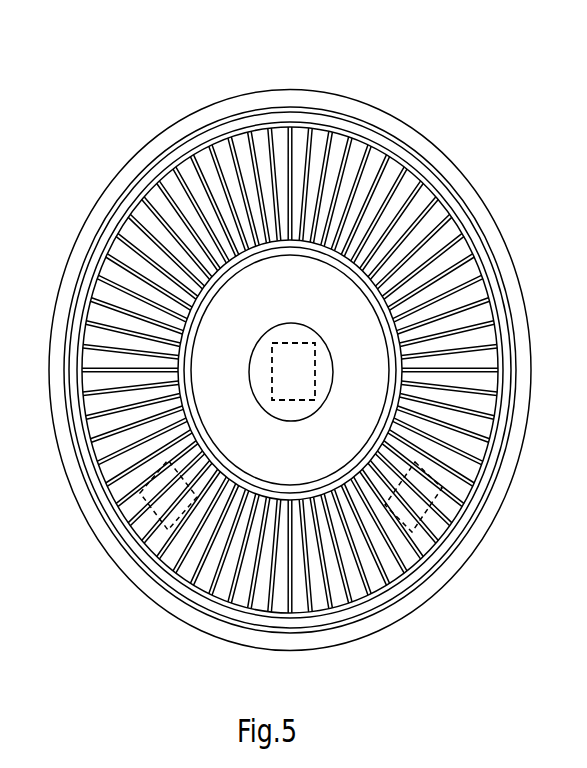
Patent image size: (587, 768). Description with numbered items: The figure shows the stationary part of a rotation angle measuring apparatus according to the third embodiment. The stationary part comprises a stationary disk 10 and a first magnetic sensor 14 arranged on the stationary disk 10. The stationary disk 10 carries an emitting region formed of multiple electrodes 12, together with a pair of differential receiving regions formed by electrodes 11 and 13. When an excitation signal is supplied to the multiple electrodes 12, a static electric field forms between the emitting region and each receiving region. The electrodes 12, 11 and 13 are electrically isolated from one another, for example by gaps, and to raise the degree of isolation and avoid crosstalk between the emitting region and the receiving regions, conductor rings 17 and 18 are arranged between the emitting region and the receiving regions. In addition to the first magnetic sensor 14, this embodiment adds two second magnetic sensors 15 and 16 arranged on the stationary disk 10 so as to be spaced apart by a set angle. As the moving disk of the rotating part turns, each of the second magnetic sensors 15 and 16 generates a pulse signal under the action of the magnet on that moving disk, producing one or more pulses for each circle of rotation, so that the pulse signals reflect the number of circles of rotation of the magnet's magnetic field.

The stationary disk 10 is at (430, 72).
The electrode 11 is at (102, 215).
The electrodes 12 is at (100, 455).
The electrode 13 is at (205, 375).
The first magnetic sensor 14 is at (317, 360).
The second magnetic sensor 15 is at (433, 498).
The second magnetic sensor 16 is at (150, 502).
The conductor ring 17 is at (83, 305).
The conductor ring 18 is at (396, 427).